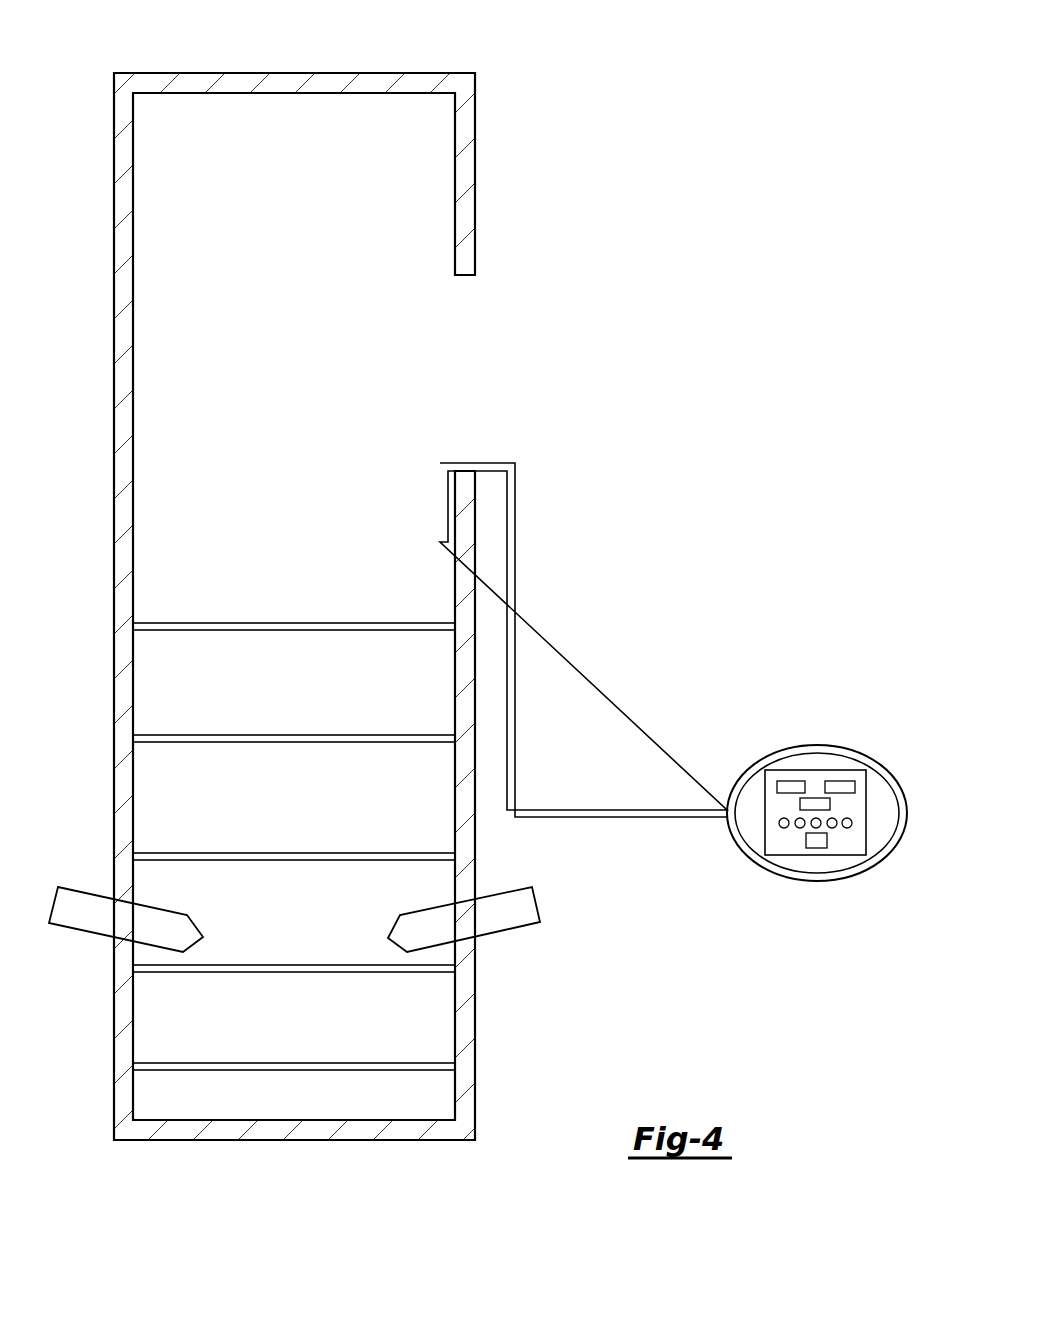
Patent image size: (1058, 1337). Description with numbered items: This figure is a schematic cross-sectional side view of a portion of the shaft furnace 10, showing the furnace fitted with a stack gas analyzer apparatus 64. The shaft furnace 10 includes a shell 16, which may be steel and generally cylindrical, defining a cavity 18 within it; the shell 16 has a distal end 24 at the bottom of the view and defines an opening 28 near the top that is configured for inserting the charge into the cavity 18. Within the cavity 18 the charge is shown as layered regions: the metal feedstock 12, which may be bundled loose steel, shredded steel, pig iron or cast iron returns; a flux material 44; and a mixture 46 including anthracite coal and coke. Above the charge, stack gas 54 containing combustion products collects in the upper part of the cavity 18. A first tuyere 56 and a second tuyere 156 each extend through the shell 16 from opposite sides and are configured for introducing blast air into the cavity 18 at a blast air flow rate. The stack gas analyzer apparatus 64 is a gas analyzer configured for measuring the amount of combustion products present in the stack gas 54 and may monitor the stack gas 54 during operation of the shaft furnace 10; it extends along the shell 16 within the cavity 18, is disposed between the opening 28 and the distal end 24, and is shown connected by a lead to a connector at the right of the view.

The shaft furnace 10 is at (87, 88).
The metal feedstock 12 is at (304, 690).
The shell 16 is at (114, 596).
The cavity 18 is at (172, 291).
The distal end 24 is at (93, 1140).
The opening 28 is at (450, 379).
The flux material 44 is at (304, 812).
The mixture 46 is at (304, 913).
The stack gas 54 is at (304, 569).
The first tuyere 56 is at (126, 919).
The stack gas analyzer apparatus 64 is at (440, 512).
The second tuyere 156 is at (464, 919).